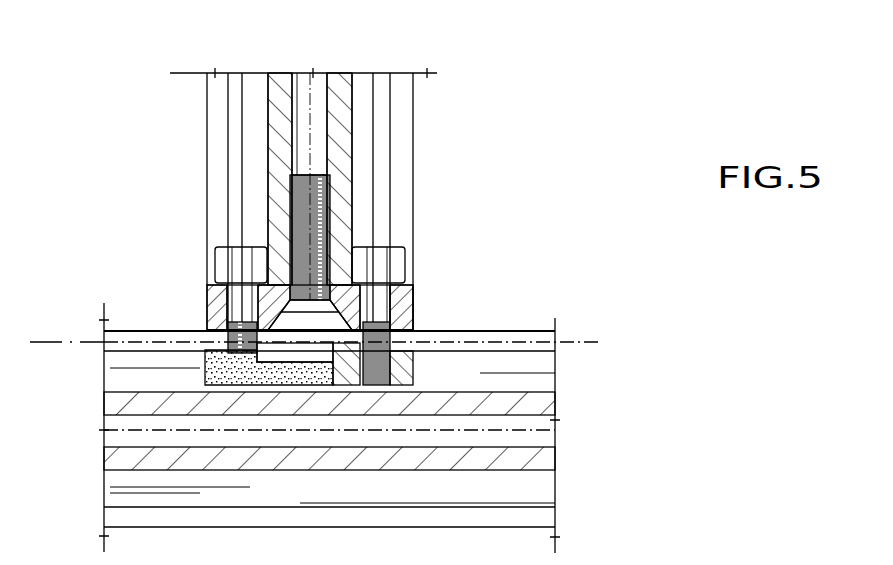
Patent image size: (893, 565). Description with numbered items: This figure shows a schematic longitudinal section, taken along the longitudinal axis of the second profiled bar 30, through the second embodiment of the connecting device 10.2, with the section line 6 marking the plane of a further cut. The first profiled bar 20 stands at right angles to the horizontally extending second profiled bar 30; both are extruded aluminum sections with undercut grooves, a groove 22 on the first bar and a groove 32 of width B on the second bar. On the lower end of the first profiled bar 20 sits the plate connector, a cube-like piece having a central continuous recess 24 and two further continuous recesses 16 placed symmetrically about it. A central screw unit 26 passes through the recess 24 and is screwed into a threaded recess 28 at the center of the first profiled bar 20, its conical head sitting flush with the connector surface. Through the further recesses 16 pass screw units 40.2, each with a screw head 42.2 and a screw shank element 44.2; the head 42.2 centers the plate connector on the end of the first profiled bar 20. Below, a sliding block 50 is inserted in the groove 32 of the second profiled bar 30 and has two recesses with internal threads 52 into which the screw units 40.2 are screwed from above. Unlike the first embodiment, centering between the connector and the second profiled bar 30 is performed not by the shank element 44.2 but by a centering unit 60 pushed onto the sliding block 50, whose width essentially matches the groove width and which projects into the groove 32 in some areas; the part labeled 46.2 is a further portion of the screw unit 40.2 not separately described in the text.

The section line 6- 6 is at (39, 322).
The connecting device 10.2 is at (457, 297).
The continuous recesses 16 is at (240, 321).
The first profiled bar 20 is at (405, 152).
The groove 22 is at (255, 90).
The central continuous recess 24 is at (207, 285).
The central screw unit 26 is at (320, 233).
The recess with internal thread 28 is at (335, 197).
The second profiled bar 30 is at (538, 437).
The groove 32 is at (533, 363).
The screw unit 40.2 is at (205, 260).
The screw head 42.2 is at (228, 250).
The screw shank element 44.2 is at (225, 305).
The threaded insert portion 46.2 is at (232, 345).
The sliding block 50 is at (265, 390).
The recesses with internal threads 52 is at (210, 388).
The centering unit 60 is at (295, 350).